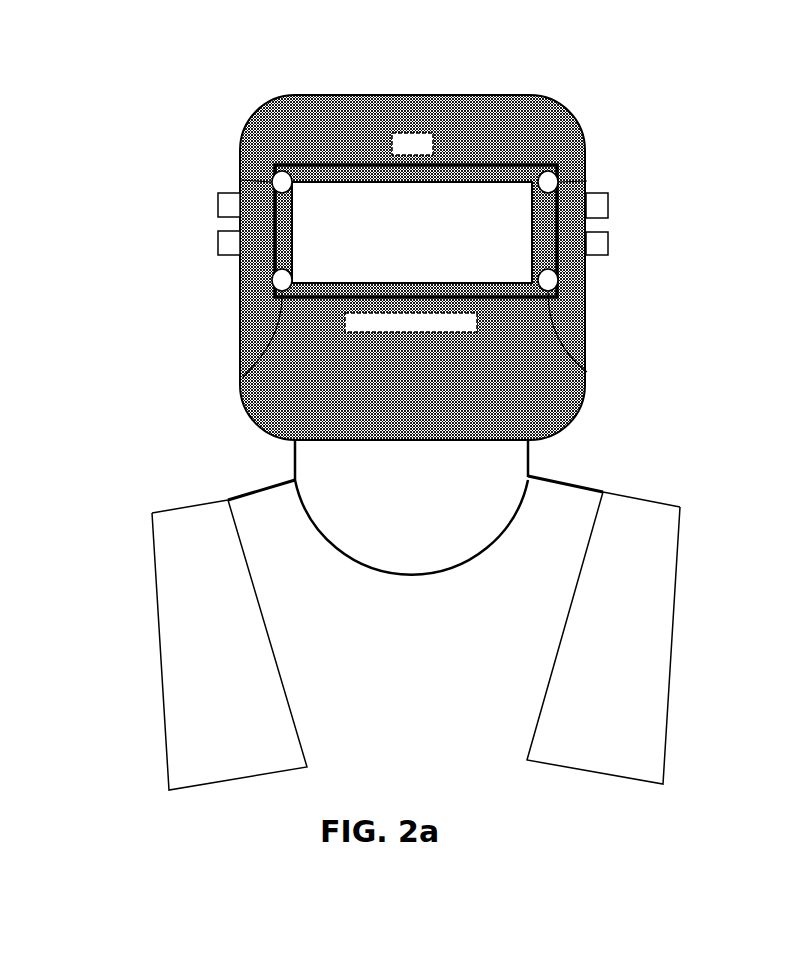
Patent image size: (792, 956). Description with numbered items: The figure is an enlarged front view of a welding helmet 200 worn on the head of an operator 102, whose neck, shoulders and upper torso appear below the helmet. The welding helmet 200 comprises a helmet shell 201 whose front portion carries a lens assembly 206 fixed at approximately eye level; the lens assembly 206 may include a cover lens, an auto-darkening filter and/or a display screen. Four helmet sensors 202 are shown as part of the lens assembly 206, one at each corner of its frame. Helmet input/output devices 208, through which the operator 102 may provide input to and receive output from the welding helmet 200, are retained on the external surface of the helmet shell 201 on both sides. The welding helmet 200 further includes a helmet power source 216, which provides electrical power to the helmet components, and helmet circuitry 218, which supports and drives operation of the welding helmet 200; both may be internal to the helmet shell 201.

The operator 102 is at (712, 574).
The welding helmet 200 is at (529, 93).
The helmet shell 201 is at (413, 93).
The helmet sensors 202 is at (240, 180).
The lens assembly 206 is at (327, 161).
The helmet input/output (I/O) devices 208 is at (218, 243).
The helmet power source 216 is at (388, 142).
The helmet circuitry 218 is at (412, 336).